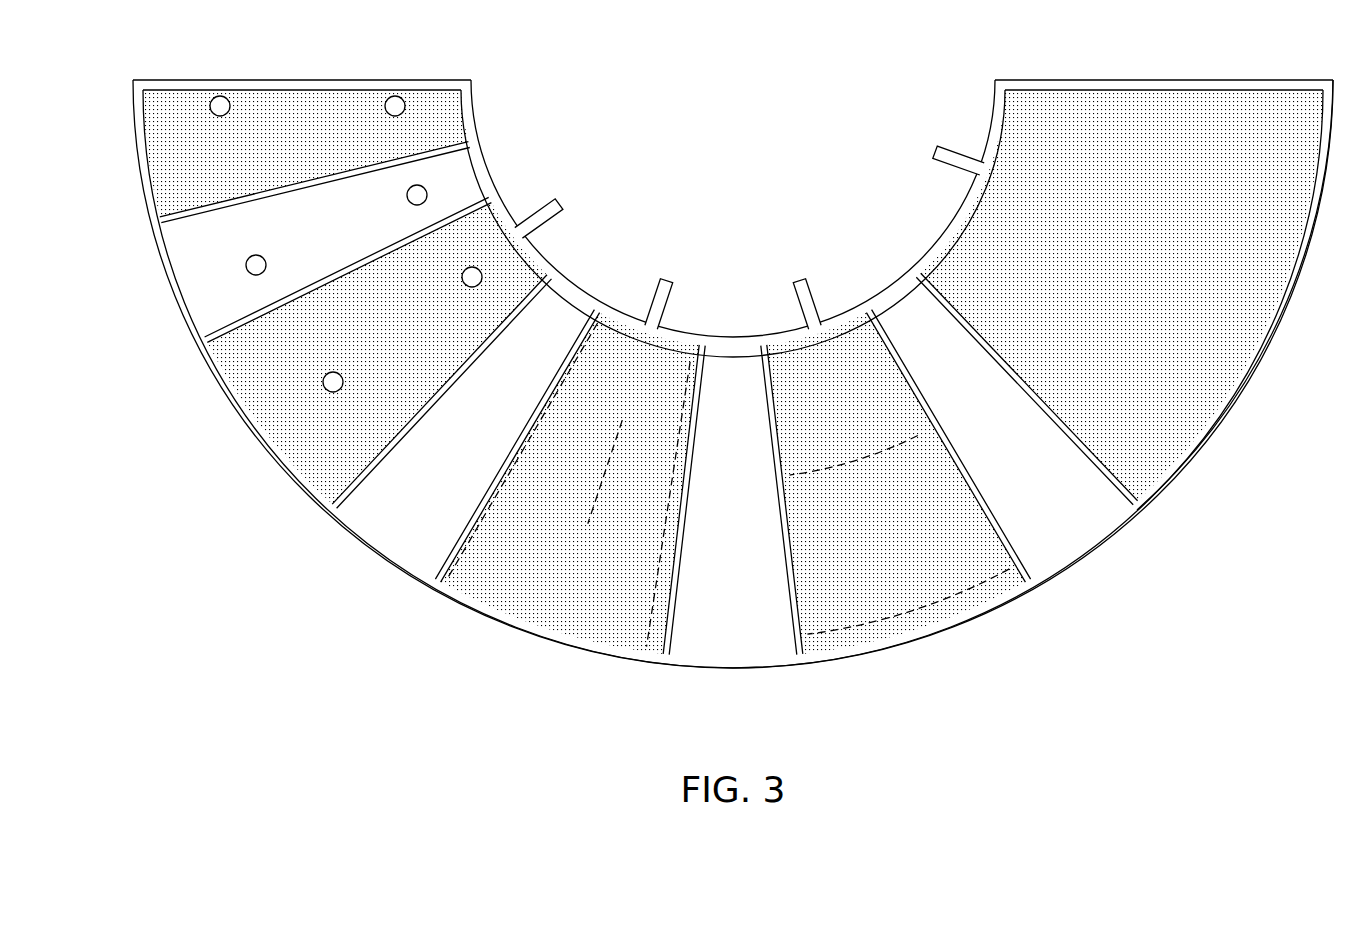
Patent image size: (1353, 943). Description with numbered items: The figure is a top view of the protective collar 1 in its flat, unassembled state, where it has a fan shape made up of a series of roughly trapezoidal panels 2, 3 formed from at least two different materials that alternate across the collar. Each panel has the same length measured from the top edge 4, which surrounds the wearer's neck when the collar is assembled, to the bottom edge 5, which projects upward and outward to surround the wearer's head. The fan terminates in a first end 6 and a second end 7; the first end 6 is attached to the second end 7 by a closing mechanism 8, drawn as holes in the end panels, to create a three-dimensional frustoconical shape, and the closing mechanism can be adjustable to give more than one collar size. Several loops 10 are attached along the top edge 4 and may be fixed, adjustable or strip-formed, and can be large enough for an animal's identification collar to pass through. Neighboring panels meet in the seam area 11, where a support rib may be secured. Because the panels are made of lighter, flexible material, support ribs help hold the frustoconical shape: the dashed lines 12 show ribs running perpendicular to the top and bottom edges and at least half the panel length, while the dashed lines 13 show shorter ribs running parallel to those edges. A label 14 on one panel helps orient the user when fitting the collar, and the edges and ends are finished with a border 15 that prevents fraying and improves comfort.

The protective collar 1 is at (733, 353).
The panel 2 is at (631, 372).
The panel 3 is at (657, 348).
The top edge 4 is at (733, 218).
The bottom edge 5 is at (733, 407).
The first end 6 is at (1164, 65).
The second end 7 is at (302, 59).
The closing mechanism 8 is at (332, 246).
The loop 10 is at (749, 228).
The area where the panels attach to each other 11 is at (650, 424).
The support ribs 12 is at (568, 485).
The support ribs 13 is at (900, 535).
The label 14 is at (1122, 295).
The border 15 is at (1235, 295).